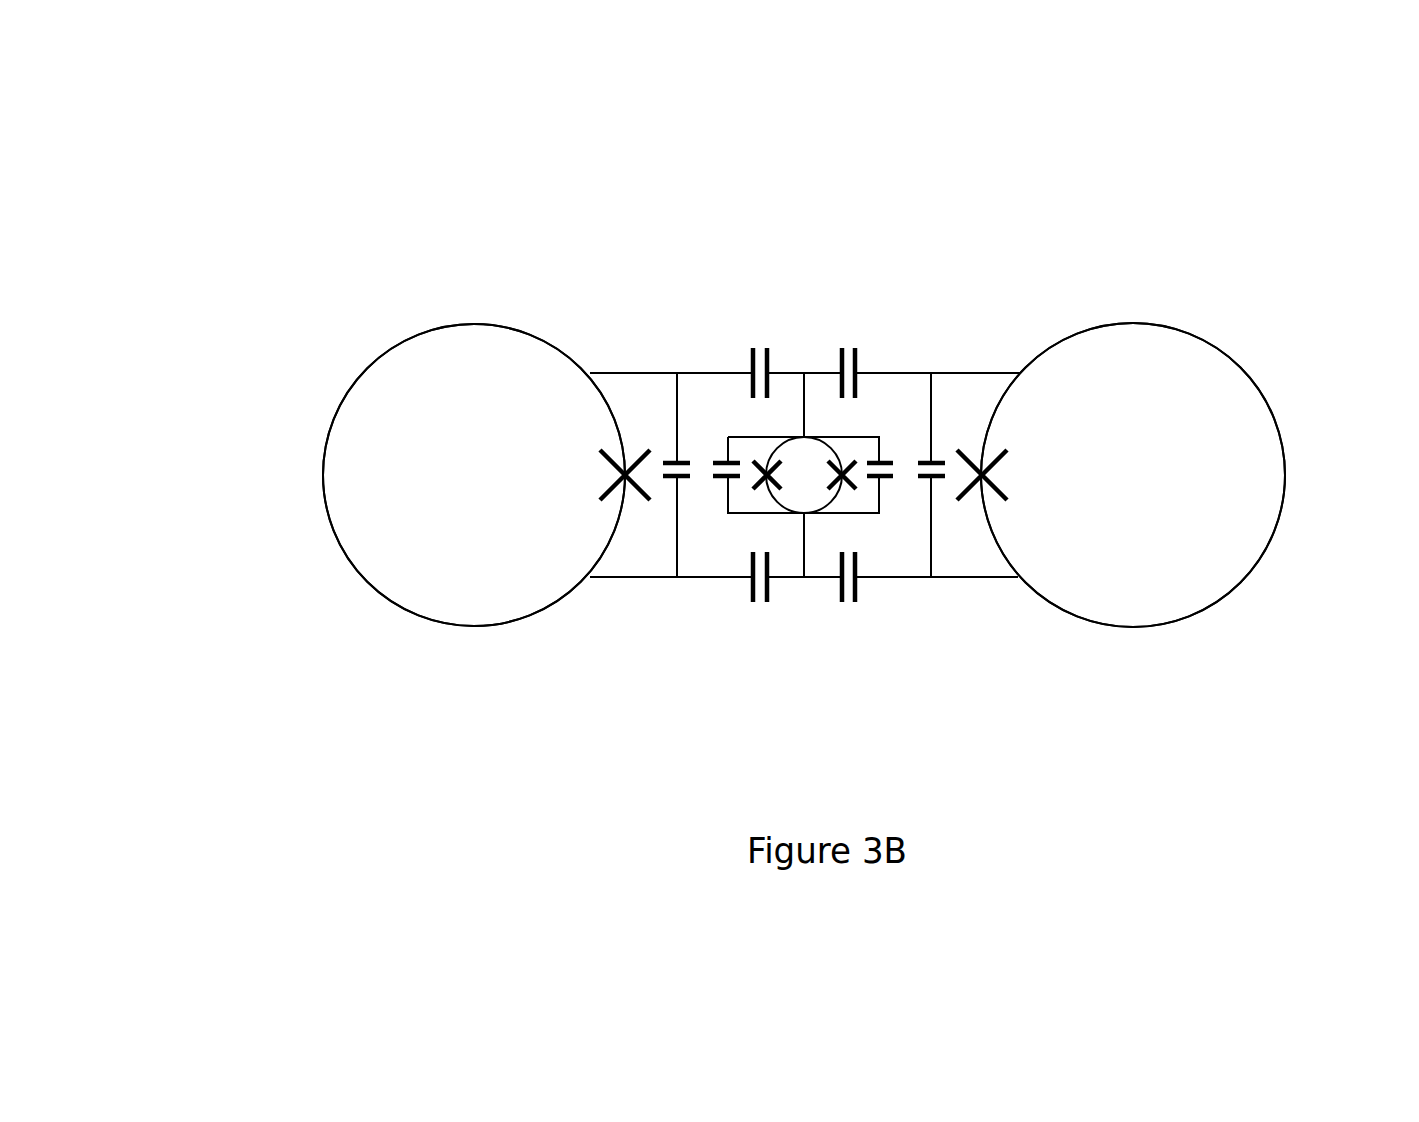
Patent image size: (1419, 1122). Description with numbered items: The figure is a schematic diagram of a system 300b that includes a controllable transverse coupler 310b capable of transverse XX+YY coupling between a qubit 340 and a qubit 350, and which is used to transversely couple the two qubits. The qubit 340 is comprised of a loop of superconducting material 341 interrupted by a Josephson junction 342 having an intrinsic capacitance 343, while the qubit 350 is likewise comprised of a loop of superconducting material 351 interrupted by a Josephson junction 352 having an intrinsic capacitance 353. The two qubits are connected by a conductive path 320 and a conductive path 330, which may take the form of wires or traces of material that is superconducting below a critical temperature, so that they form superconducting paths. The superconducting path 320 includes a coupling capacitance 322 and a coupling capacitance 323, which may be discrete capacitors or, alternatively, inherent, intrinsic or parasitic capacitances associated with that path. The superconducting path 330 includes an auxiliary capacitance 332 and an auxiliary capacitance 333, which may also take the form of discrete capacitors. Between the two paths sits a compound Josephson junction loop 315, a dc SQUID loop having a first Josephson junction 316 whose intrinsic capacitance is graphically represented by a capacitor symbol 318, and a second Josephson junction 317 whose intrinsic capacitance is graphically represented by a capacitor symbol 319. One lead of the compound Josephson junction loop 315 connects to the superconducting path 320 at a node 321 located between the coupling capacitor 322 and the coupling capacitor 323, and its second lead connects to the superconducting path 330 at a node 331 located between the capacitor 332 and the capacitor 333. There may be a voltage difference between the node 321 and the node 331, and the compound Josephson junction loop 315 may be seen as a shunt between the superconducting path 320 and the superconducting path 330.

The system 300b is at (828, 242).
The controllable transverse coupler 310b is at (805, 647).
The compound Josephson junction loop 315 is at (860, 609).
The first Josephson junction 316 is at (765, 495).
The second Josephson junction 317 is at (843, 495).
The capacitor symbol 318 is at (713, 456).
The capacitor symbol 319 is at (890, 456).
The conductive path 320 is at (892, 367).
The node 321 is at (752, 335).
The coupling capacitance 322 is at (803, 373).
The coupling capacitance 323 is at (853, 335).
The conductive path 330 is at (740, 582).
The node 331 is at (803, 583).
The auxiliary capacitance 332 is at (753, 610).
The auxiliary capacitance 333 is at (817, 522).
The qubit 340 is at (395, 314).
The loop of superconducting material 341 is at (366, 362).
The Josephson junction 342 is at (615, 503).
The intrinsic capacitance 343 is at (665, 483).
The qubit 350 is at (1193, 314).
The loop of superconducting material 351 is at (1245, 362).
The Josephson junction 352 is at (990, 507).
The intrinsic capacitance 353 is at (943, 485).